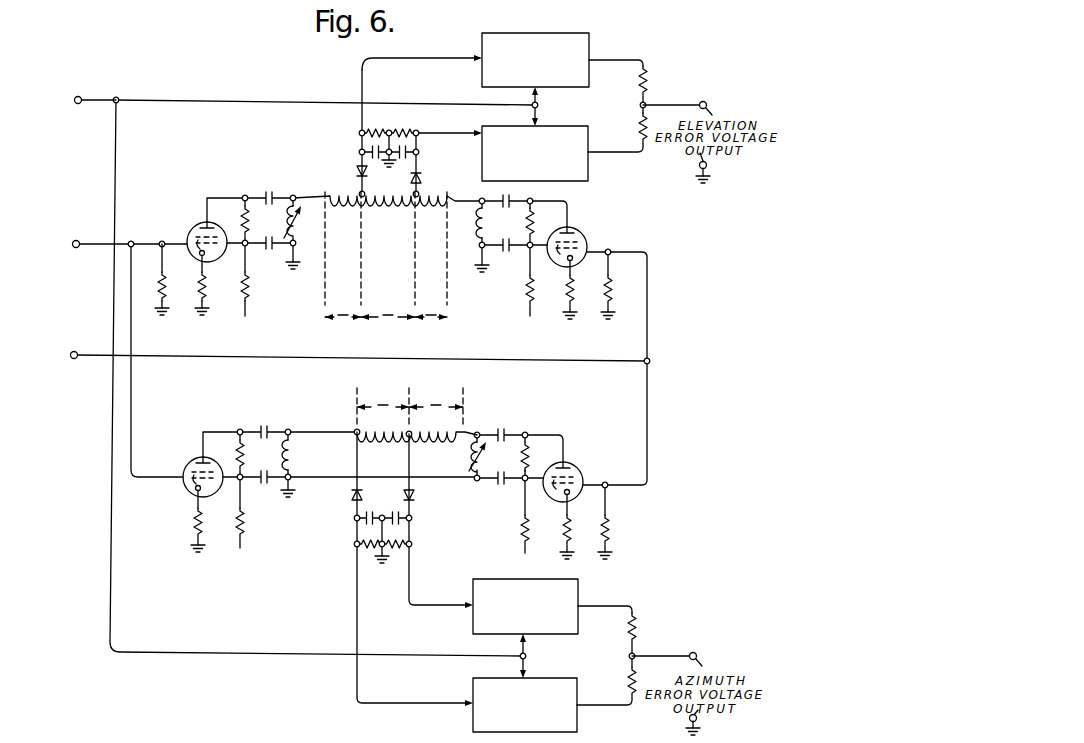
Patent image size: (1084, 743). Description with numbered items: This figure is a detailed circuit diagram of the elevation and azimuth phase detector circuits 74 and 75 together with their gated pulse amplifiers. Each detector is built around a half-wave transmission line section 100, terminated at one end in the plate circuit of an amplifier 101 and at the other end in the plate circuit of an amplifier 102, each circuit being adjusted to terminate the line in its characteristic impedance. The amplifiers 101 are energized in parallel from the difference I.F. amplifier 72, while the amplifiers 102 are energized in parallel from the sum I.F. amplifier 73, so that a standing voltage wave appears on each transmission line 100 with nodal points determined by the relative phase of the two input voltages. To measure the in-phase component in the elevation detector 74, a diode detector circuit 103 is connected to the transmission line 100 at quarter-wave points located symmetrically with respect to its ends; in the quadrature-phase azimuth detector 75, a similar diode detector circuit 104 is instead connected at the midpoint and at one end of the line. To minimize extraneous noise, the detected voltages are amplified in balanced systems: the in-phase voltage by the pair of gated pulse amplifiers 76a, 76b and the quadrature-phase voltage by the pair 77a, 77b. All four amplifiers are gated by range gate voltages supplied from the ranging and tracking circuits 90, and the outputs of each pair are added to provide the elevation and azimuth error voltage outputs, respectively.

The ranging and tracking circuits 90 is at (94, 98).
The difference I.F. amplifier 72 is at (73, 242).
The sum I.F. amplifier 73 is at (71, 353).
The elevation phase detector circuit 74 is at (328, 156).
The azimuth phase detector circuit 75 is at (340, 414).
The gated pulse amplifier 76a is at (547, 27).
The gated pulse amplifier 76b is at (588, 171).
The gated pulse amplifier 77a is at (578, 592).
The gated pulse amplifier 77b is at (563, 670).
The half-wave transmission line section 100 is at (398, 238).
The amplifier 101 is at (189, 219).
The amplifier 102 is at (611, 229).
The diode detector circuit 103 is at (408, 125).
The diode detector circuit 104 is at (392, 600).